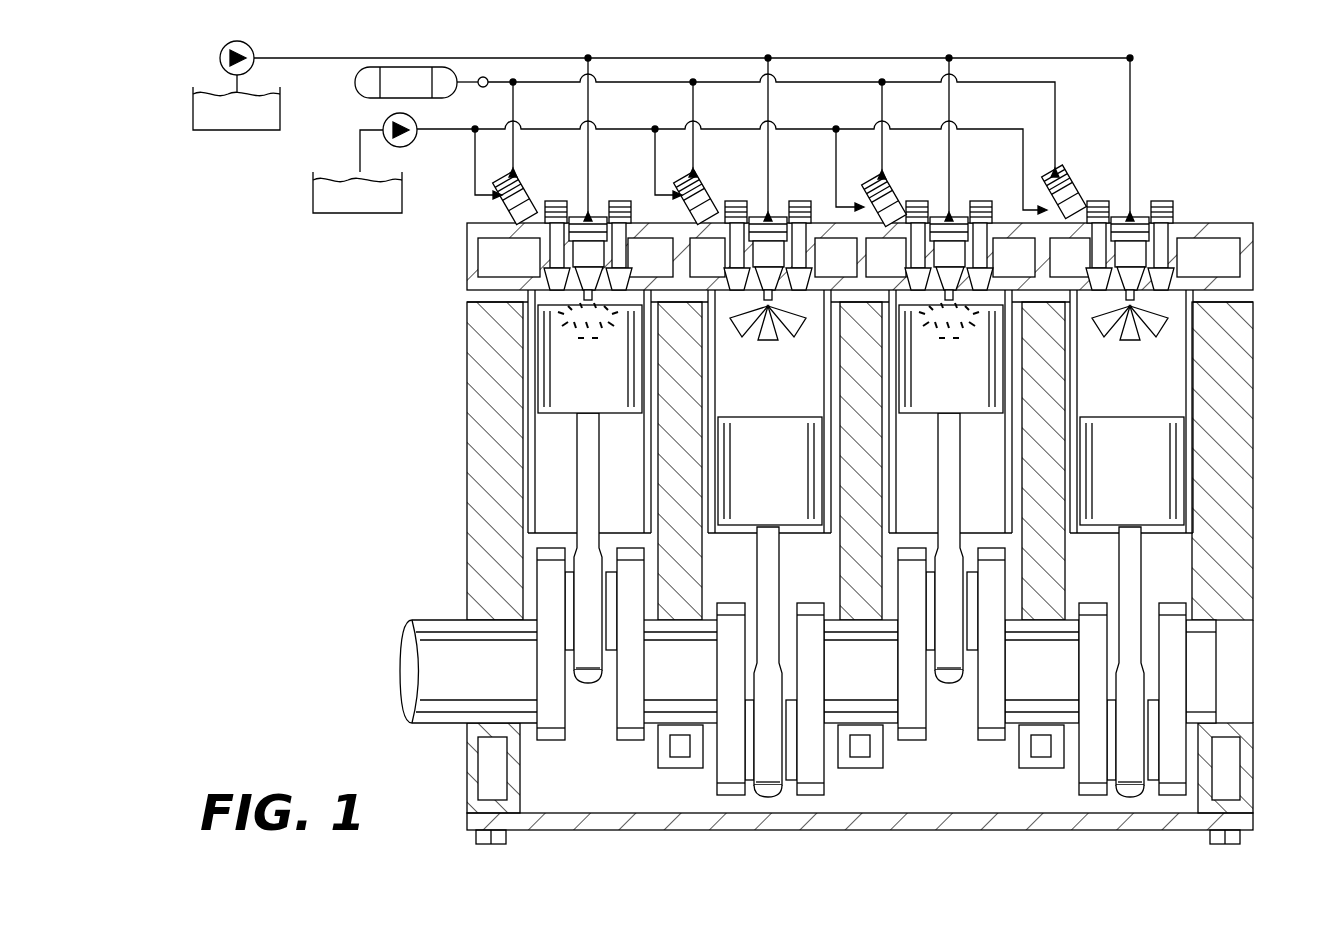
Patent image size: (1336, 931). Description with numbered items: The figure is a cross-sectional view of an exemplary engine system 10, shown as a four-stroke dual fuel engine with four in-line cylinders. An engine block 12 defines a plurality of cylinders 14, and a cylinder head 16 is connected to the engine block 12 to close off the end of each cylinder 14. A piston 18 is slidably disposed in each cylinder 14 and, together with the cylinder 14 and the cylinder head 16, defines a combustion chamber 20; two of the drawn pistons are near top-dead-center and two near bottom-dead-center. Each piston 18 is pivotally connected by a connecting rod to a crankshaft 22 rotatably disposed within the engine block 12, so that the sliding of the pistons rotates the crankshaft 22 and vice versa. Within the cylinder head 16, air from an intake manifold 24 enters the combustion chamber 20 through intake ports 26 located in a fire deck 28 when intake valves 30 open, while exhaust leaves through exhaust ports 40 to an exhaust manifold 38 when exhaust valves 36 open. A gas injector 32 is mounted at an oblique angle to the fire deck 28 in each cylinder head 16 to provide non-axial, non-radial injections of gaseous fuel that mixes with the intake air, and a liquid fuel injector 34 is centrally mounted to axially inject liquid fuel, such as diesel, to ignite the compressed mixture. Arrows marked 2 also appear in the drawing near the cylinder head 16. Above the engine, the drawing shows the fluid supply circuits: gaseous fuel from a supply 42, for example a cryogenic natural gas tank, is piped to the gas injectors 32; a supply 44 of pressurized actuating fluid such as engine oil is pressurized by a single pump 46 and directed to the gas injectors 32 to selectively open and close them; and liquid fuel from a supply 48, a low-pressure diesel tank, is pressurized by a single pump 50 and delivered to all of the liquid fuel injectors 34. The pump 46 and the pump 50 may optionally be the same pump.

The engine system 10 is at (266, 218).
The intake air flow 2 is at (448, 214).
The engine block 12 is at (1225, 412).
The cylinder 14 is at (520, 545).
The cylinder head 16 is at (490, 222).
The piston 18 is at (572, 390).
The combustion chamber 20 is at (758, 390).
The crankshaft 22 is at (464, 686).
The intake manifold 24 is at (642, 267).
The intake port 26 is at (615, 295).
The fire deck 28 is at (1170, 290).
The intake valve 30 is at (1098, 302).
The gas injector 32 is at (524, 192).
The liquid fuel injector 34 is at (593, 238).
The exhaust valve 36 is at (798, 302).
The exhaust manifold 38 is at (500, 267).
The exhaust port 40 is at (545, 292).
The supply 42 is at (362, 97).
The supply 44 is at (320, 215).
The pump 46 is at (411, 144).
The supply 48 is at (197, 133).
The pump 50 is at (253, 50).